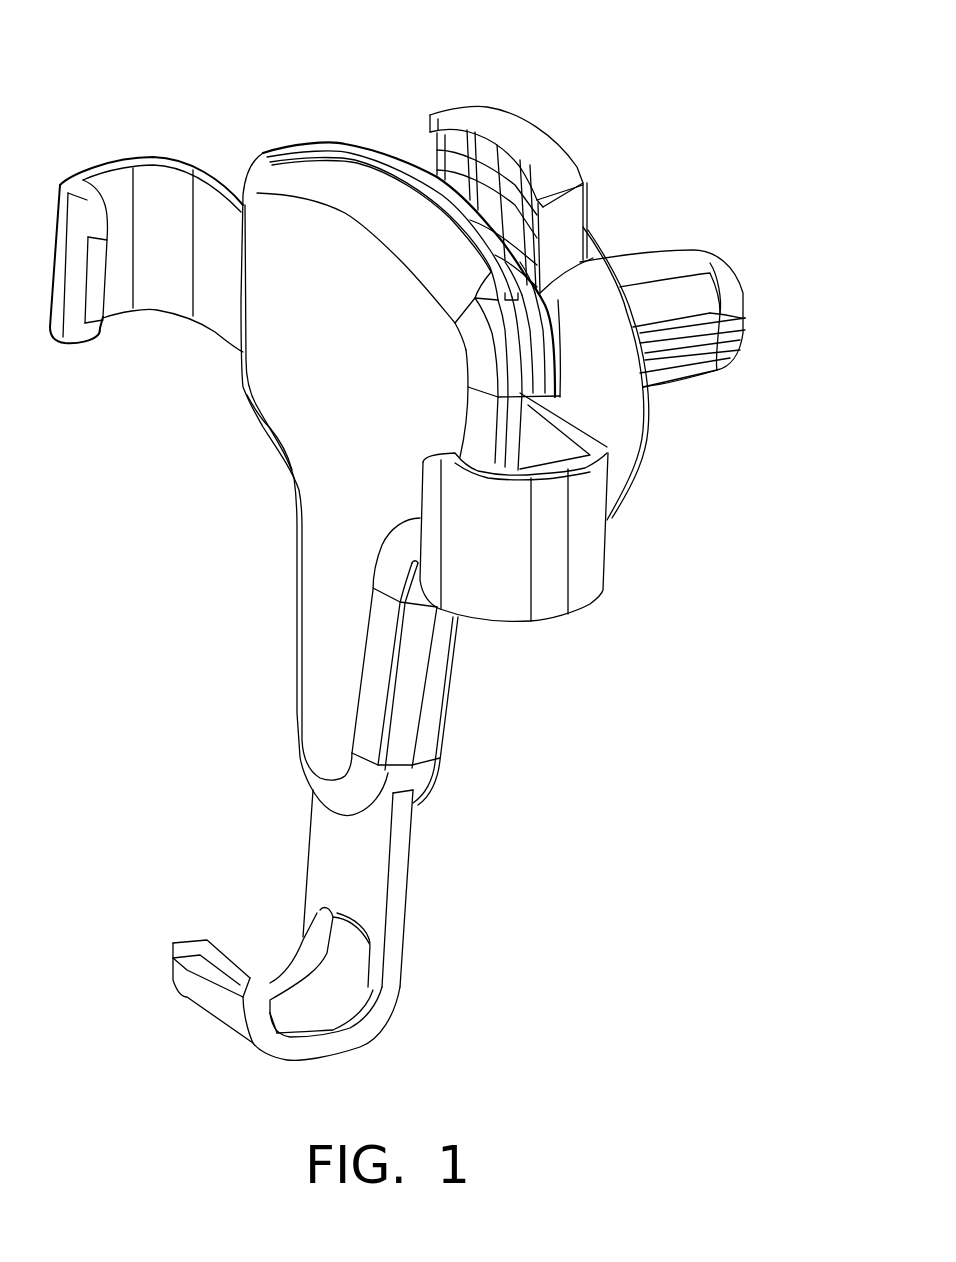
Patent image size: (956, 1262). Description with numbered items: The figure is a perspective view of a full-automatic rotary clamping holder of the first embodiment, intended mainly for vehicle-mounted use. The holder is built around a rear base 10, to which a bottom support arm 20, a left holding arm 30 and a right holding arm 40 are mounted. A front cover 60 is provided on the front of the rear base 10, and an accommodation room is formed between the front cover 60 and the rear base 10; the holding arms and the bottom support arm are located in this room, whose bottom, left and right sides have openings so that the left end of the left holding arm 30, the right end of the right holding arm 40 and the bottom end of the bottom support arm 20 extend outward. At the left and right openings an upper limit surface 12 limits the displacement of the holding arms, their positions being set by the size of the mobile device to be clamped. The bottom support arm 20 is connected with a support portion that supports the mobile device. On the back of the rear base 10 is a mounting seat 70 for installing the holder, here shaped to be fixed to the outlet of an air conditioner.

The rear base 10 is at (373, 155).
The upper limit surface 12 is at (510, 300).
The bottom support arm 20 is at (380, 885).
The left holding arm 30 is at (143, 307).
The right holding arm 40 is at (507, 610).
The front cover 60 is at (325, 238).
The mounting seat 70 is at (623, 273).